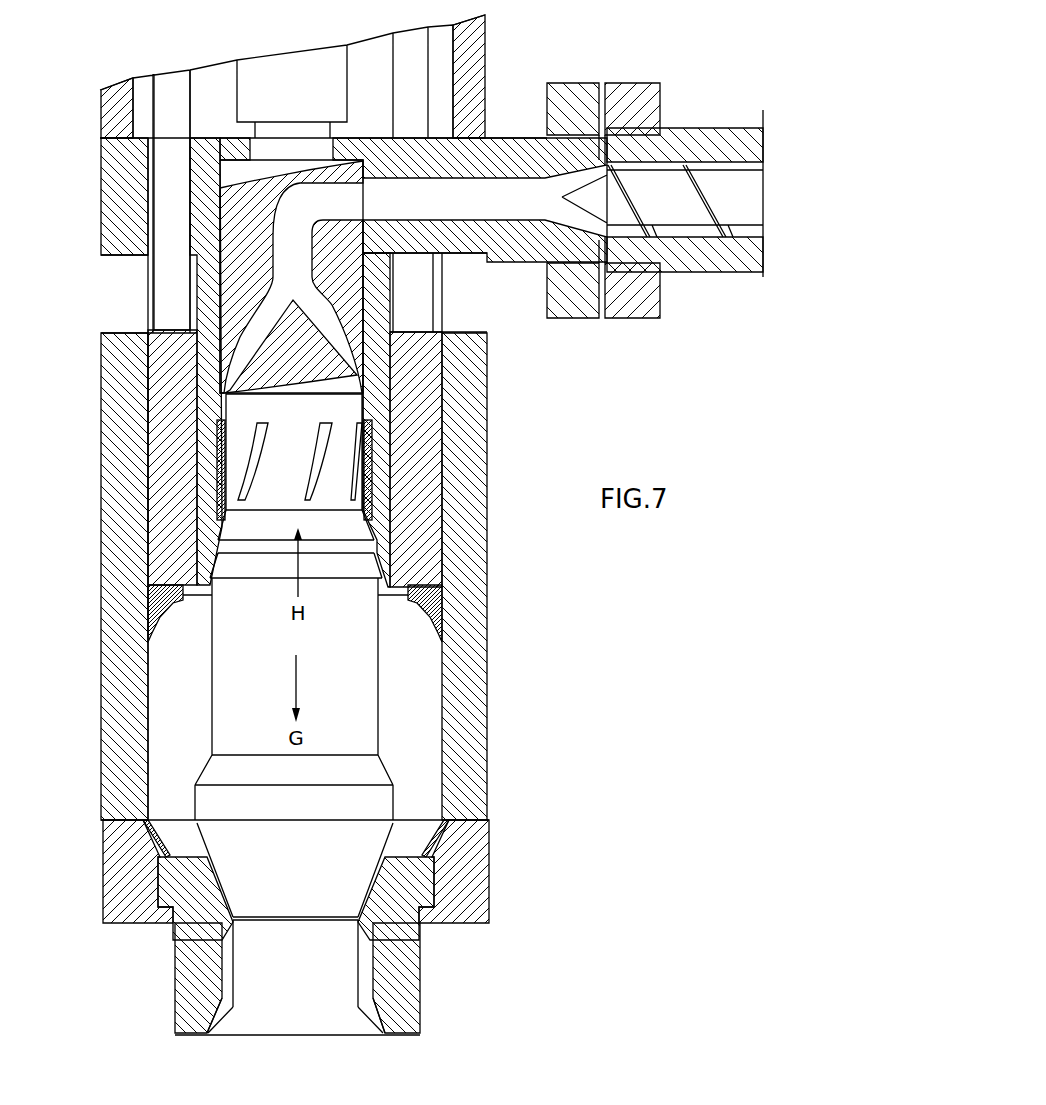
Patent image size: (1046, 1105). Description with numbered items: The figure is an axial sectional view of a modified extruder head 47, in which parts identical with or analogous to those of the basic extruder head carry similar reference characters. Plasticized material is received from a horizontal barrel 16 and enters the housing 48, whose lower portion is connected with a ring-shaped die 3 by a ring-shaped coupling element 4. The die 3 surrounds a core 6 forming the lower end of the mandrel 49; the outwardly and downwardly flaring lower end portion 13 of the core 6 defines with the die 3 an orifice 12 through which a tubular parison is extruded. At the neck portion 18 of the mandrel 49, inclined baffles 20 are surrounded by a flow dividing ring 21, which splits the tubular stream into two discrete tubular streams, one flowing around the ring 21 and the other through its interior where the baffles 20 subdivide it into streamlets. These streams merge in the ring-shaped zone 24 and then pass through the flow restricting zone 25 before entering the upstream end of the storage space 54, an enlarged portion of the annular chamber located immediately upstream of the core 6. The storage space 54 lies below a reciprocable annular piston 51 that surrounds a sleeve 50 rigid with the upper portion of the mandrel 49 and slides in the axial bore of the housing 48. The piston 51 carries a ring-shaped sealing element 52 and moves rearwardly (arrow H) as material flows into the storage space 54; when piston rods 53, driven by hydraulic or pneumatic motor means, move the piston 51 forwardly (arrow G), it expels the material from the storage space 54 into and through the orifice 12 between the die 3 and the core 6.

The ring-shaped die 3 is at (402, 945).
The ring-shaped coupling element 4 is at (475, 870).
The core 6 is at (247, 960).
The orifice 12 is at (373, 1010).
The lower end portion 13 is at (238, 1020).
The barrel 16 is at (707, 124).
The neck portion 18 is at (343, 408).
The baffles 20 is at (310, 462).
The flow dividing ring 21 is at (370, 477).
The ring-shaped zone 24 is at (218, 530).
The flow restricting zone 25 is at (220, 550).
The modified extruder head 47 is at (98, 453).
The housing 48 is at (473, 528).
The mandrel 49 is at (230, 224).
The sleeve 50 is at (208, 355).
The annular piston 51 is at (418, 353).
The ring-shaped sealing element 52 is at (437, 593).
The piston rods 53 is at (168, 295).
The storage space 54 is at (418, 703).